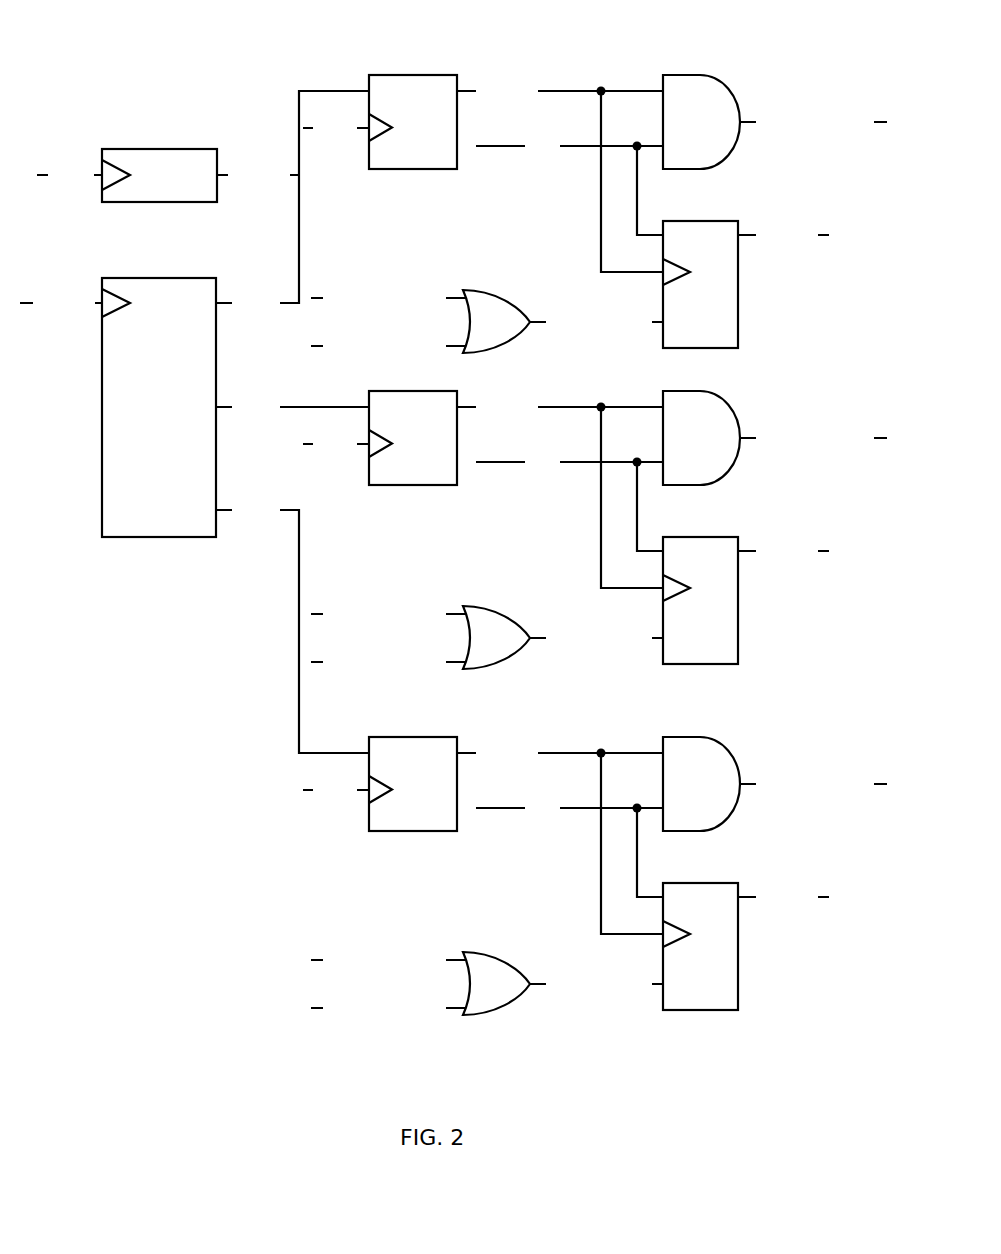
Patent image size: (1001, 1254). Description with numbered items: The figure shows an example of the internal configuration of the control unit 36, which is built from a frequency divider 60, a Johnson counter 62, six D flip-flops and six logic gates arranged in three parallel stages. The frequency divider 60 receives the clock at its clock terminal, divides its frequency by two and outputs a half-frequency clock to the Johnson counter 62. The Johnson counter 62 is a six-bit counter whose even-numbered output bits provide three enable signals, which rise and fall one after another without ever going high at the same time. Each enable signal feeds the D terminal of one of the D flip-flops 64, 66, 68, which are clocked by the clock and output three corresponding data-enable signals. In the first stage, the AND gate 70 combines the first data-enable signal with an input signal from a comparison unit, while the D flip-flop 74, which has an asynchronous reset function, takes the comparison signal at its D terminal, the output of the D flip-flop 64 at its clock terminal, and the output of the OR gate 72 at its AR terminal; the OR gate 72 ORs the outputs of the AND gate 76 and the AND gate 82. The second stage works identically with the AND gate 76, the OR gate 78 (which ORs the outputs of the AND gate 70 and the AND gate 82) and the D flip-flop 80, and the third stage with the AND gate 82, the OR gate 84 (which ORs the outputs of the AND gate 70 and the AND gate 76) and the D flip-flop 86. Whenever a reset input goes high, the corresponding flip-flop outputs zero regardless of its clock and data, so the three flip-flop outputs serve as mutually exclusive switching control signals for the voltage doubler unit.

The control unit 36 is at (135, 42).
The frequency divider 60 is at (157, 149).
The Johnson counter 62 is at (160, 537).
The D flip-flop 64 is at (415, 169).
The D flip-flop 66 is at (380, 469).
The D flip-flop 68 is at (380, 815).
The AND gate 70 is at (728, 153).
The OR gate 72 is at (495, 288).
The D flip-flop 74 is at (739, 323).
The AND gate 76 is at (775, 444).
The OR gate 78 is at (487, 615).
The D flip-flop 80 is at (715, 535).
The AND gate 82 is at (775, 790).
The OR gate 84 is at (487, 961).
The D flip-flop 86 is at (715, 881).